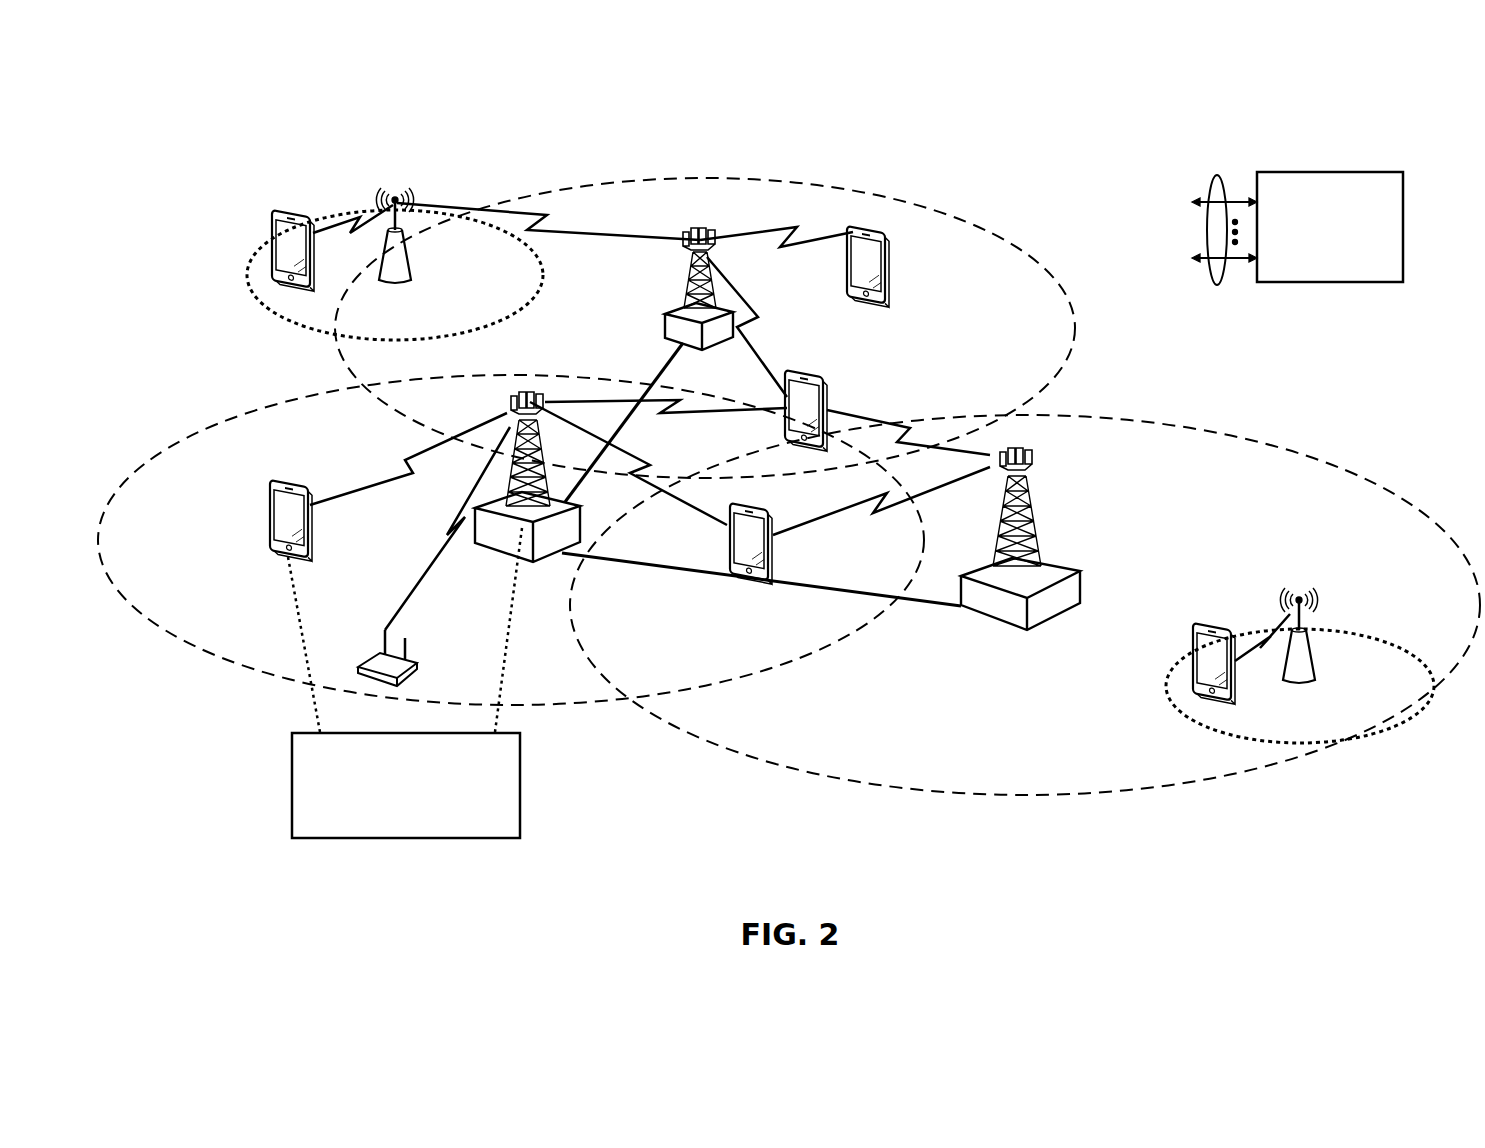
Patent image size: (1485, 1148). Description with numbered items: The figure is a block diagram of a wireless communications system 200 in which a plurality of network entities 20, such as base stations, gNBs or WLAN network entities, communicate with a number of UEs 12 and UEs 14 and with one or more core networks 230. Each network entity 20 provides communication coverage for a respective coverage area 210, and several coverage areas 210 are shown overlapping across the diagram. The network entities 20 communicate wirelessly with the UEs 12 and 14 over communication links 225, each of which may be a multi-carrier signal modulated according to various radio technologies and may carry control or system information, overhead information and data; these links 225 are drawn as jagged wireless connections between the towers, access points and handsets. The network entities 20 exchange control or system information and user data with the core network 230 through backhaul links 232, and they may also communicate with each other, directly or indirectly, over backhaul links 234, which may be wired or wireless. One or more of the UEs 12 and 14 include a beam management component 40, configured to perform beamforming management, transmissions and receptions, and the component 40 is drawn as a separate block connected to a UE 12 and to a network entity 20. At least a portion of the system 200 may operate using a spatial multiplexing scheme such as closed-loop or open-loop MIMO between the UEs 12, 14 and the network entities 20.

The wireless communications system 200 is at (270, 118).
The UE 12 is at (273, 231).
The UE 14 is at (893, 259).
The network entity 20 is at (412, 280).
The beam management component 40 is at (420, 840).
The coverage area 210 is at (252, 277).
The communication link 225 is at (350, 220).
The core network 230 is at (1321, 170).
The backhaul links 232 is at (1220, 178).
The backhaul links 234 is at (660, 378).